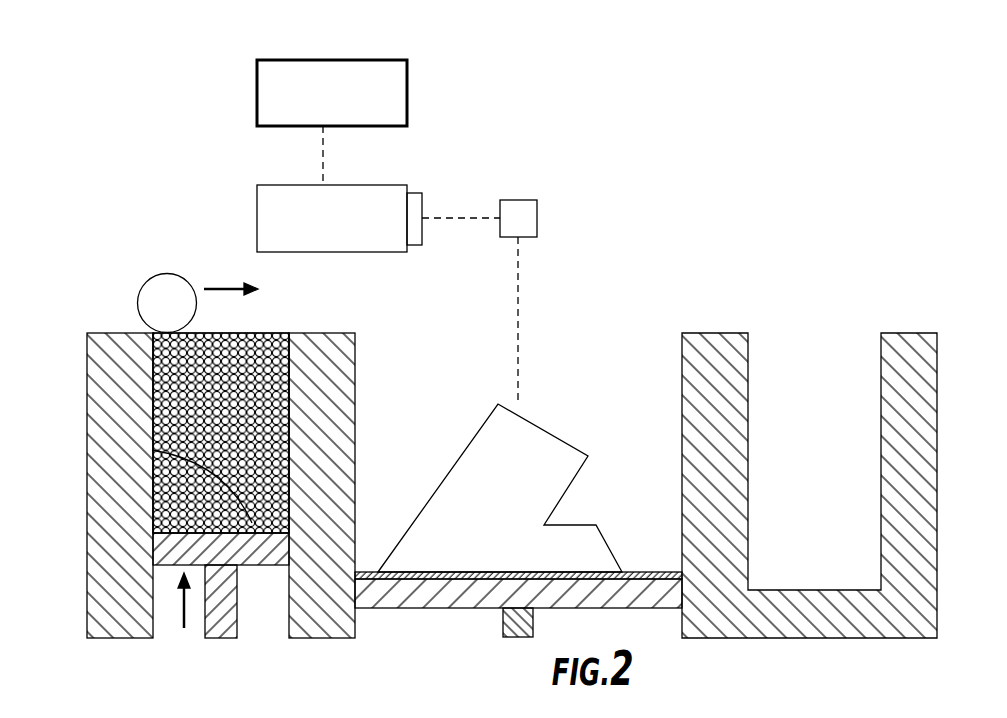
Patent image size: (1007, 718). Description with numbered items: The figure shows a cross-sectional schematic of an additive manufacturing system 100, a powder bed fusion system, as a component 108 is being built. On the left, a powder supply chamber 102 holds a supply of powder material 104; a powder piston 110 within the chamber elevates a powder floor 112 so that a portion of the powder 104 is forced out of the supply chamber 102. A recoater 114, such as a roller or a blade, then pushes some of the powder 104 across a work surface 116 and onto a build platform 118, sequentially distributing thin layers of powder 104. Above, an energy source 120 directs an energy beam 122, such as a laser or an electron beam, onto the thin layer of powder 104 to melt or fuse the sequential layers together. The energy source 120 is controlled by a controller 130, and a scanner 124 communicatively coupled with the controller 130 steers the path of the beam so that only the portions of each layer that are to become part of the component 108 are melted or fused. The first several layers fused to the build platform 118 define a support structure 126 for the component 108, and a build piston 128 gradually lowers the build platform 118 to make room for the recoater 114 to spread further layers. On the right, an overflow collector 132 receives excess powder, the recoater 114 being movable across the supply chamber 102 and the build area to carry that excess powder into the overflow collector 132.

The additive manufacturing system 100 is at (616, 95).
The powder supply chamber 102 is at (223, 345).
The powder material 104 is at (199, 431).
The component 108 is at (552, 423).
The powder piston 110 is at (237, 614).
The powder floor 112 is at (152, 450).
The recoater 114 is at (170, 274).
The work surface 116 is at (323, 333).
The build platform 118 is at (592, 593).
The energy source 120 is at (350, 185).
The energy beam 122 is at (518, 272).
The scanner 124 is at (513, 200).
The support structure 126 is at (631, 562).
The build piston 128 is at (503, 620).
The controller 130 is at (316, 122).
The overflow collector 132 is at (800, 489).